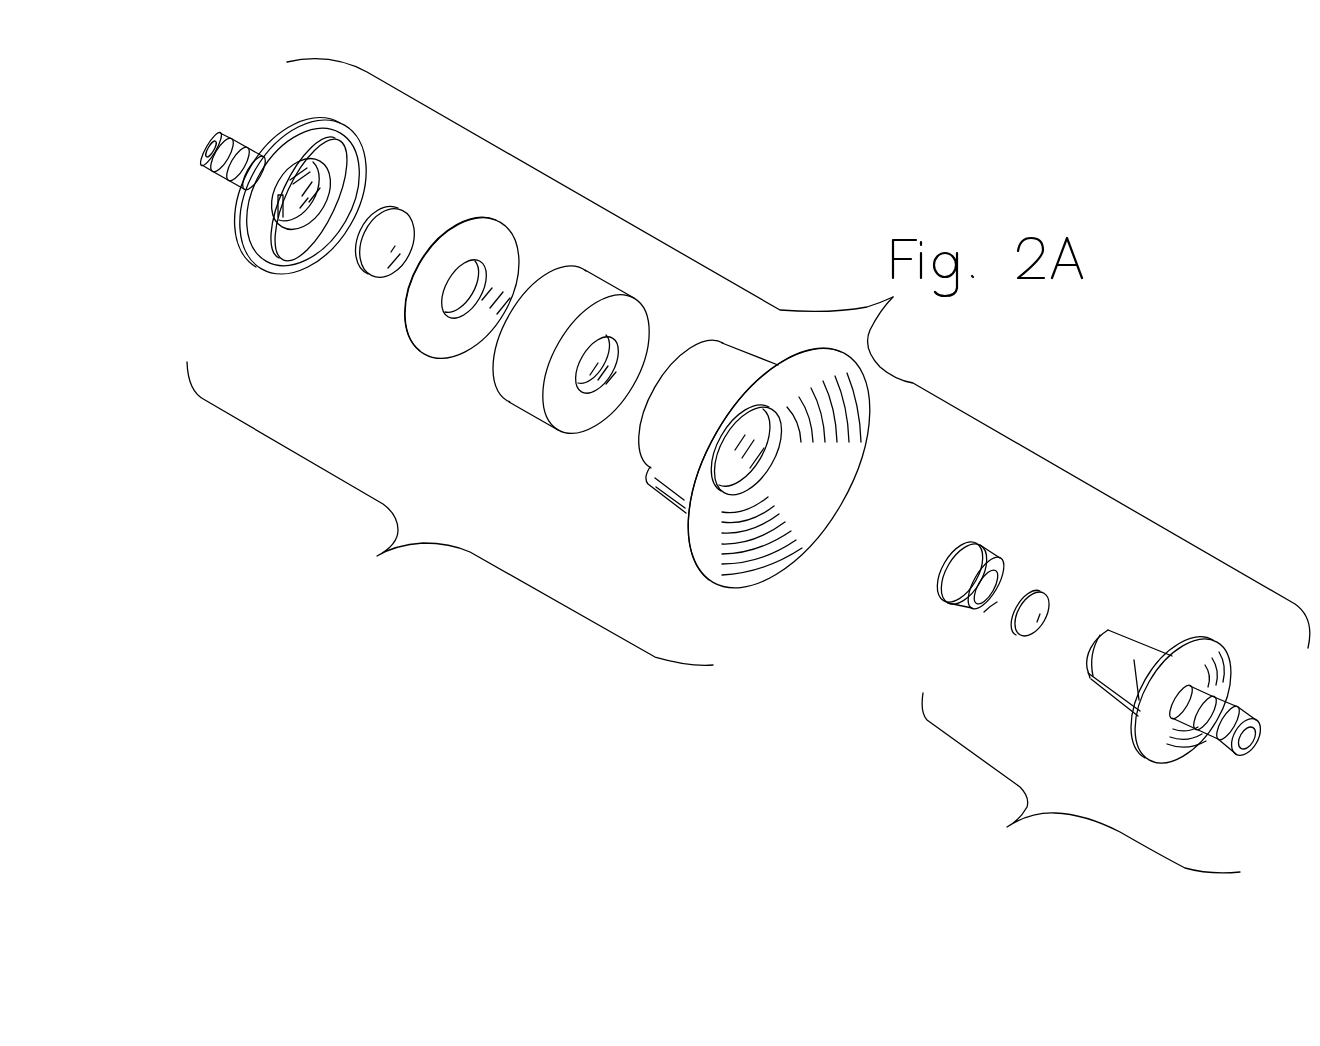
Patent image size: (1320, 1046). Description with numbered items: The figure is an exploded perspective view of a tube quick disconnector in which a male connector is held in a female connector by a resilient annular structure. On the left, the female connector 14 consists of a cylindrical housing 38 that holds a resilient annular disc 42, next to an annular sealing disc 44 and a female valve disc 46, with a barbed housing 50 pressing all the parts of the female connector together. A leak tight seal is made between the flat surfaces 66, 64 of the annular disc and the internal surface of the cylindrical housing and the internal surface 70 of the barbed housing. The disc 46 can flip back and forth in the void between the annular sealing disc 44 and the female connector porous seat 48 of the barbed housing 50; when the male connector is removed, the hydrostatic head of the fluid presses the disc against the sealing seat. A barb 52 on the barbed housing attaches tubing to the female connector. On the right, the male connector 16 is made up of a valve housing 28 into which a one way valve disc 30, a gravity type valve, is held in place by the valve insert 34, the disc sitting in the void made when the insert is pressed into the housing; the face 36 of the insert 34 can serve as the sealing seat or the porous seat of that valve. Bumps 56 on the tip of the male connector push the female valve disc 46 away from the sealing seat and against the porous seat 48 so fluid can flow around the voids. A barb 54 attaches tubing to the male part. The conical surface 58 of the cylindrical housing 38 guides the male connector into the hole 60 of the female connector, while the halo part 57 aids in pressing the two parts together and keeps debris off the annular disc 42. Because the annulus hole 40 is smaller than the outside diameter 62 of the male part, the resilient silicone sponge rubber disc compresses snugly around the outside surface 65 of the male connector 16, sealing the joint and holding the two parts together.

The female connector 14 is at (748, 362).
The male connector 16 is at (1081, 783).
The valve housing 28 is at (1133, 648).
The one way valve disc 30 is at (1047, 607).
The valve insert 34 is at (949, 547).
The face of insert 36 is at (997, 604).
The cylindrical housing 38 is at (660, 443).
The annulus hole 40 is at (606, 350).
The resilient annular disc 42 is at (592, 285).
The annular sealing disc 44 is at (430, 350).
The female valve disc 46 is at (400, 233).
The female connector porous seat 48 is at (283, 215).
The barbed housing 50 is at (303, 128).
The barb 52 is at (212, 130).
The barb 54 is at (1210, 737).
The bumps 56 is at (1108, 627).
The halo part 57 is at (1157, 747).
The conical surface 58 is at (833, 467).
The hole 60 is at (778, 468).
The outside diameter 62 is at (1088, 648).
The flat surface of annular disc 64 is at (572, 427).
The outside surface 65 is at (1138, 682).
The flat surface of annular disc 66 is at (495, 373).
The internal surface 70 is at (337, 163).